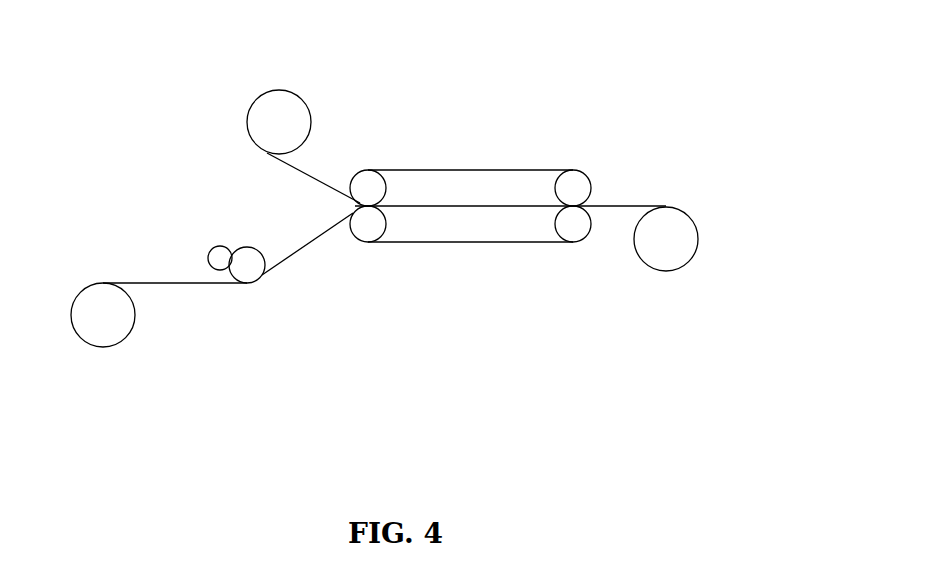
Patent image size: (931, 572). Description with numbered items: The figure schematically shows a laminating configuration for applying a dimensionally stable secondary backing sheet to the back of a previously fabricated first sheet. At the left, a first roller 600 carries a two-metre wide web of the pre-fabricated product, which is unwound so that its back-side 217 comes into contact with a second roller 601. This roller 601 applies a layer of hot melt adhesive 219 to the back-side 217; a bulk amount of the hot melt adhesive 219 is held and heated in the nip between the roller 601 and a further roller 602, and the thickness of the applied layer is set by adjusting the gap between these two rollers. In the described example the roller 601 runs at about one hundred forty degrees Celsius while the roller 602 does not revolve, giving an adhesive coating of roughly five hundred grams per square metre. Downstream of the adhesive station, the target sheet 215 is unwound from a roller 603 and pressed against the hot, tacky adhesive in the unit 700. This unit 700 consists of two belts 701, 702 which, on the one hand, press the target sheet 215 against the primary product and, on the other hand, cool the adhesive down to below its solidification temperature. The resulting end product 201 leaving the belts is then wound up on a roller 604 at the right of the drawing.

The back-side 217 is at (122, 280).
The hot melt adhesive (HMA) 219 is at (233, 250).
The target sheet 215 is at (315, 177).
The end product 201 is at (637, 203).
The first roller 600 is at (134, 316).
The second roller 601 is at (247, 250).
The roller 602 is at (212, 250).
The roller 603 is at (287, 103).
The roller 604 is at (687, 248).
The unit 700 is at (472, 133).
The belt 701 is at (537, 170).
The belt 702 is at (433, 242).